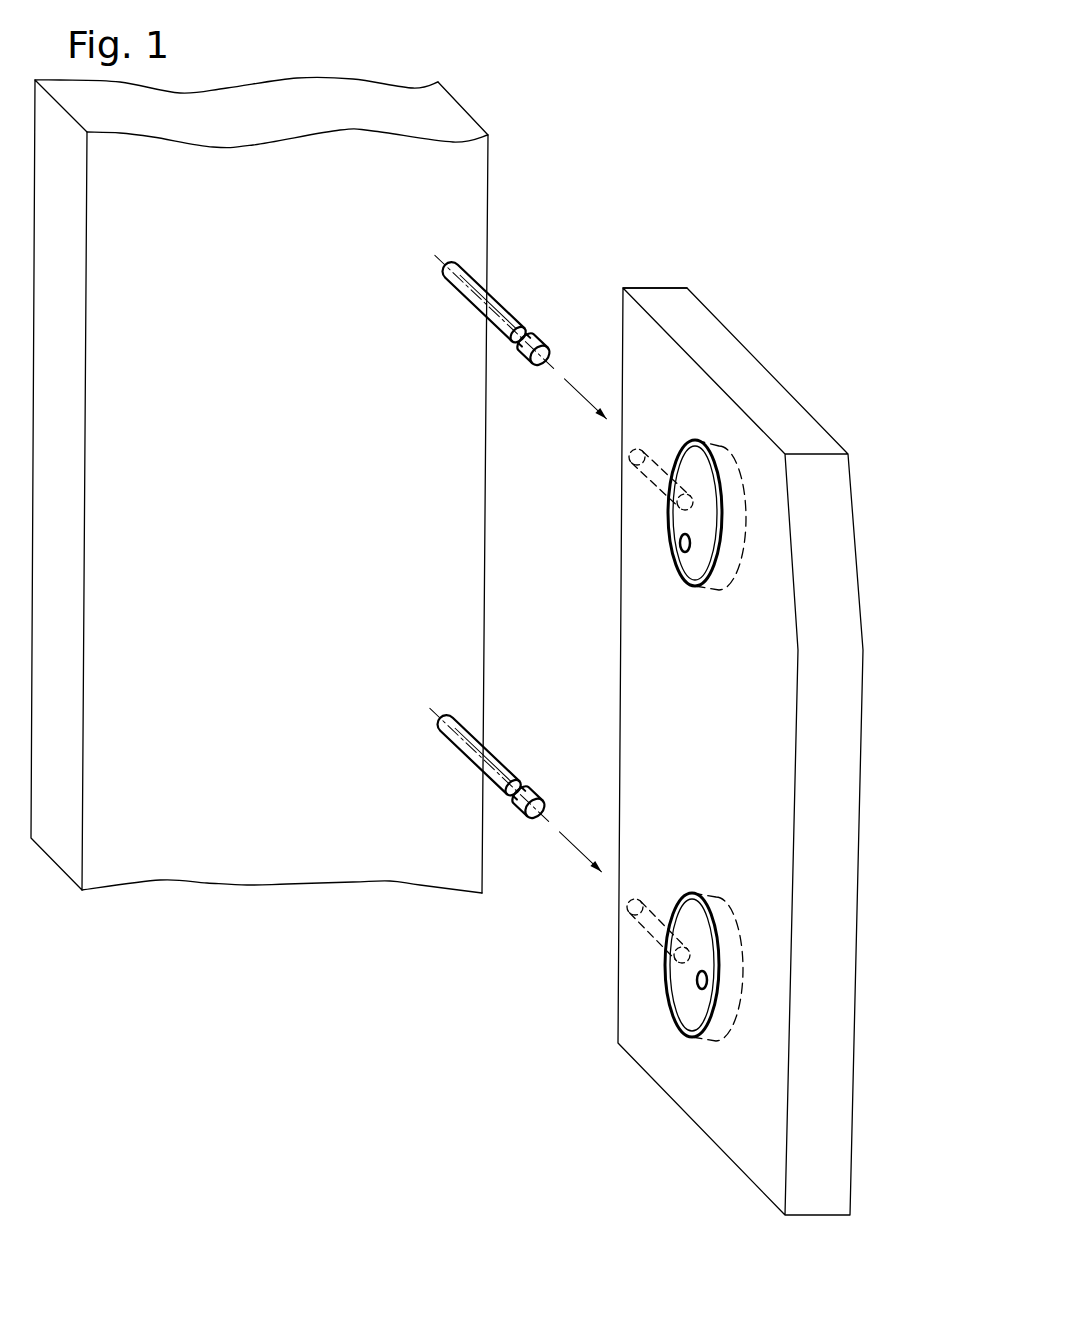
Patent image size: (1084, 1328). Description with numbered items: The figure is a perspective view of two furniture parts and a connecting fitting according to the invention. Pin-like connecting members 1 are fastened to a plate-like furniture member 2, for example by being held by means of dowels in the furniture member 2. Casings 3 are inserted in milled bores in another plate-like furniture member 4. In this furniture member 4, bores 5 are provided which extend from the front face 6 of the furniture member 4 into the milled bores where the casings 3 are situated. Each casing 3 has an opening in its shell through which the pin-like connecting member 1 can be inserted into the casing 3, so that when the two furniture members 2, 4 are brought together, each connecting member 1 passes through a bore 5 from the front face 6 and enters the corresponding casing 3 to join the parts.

The pin-like connecting member 1 is at (502, 312).
The plate-like furniture member 2 is at (462, 179).
The casing 3 is at (690, 520).
The plate-like furniture member 4 is at (697, 332).
The bore 5 is at (648, 480).
The front face 6 is at (652, 287).